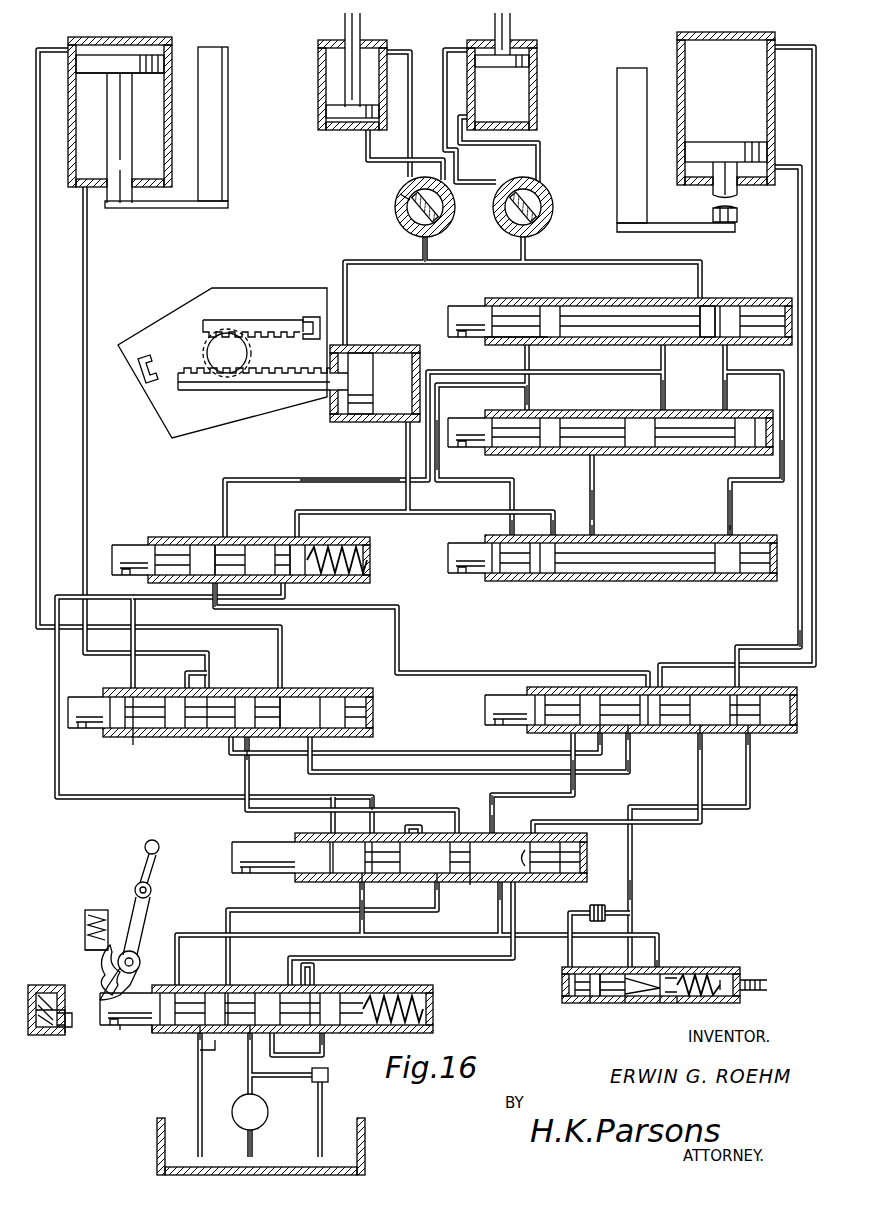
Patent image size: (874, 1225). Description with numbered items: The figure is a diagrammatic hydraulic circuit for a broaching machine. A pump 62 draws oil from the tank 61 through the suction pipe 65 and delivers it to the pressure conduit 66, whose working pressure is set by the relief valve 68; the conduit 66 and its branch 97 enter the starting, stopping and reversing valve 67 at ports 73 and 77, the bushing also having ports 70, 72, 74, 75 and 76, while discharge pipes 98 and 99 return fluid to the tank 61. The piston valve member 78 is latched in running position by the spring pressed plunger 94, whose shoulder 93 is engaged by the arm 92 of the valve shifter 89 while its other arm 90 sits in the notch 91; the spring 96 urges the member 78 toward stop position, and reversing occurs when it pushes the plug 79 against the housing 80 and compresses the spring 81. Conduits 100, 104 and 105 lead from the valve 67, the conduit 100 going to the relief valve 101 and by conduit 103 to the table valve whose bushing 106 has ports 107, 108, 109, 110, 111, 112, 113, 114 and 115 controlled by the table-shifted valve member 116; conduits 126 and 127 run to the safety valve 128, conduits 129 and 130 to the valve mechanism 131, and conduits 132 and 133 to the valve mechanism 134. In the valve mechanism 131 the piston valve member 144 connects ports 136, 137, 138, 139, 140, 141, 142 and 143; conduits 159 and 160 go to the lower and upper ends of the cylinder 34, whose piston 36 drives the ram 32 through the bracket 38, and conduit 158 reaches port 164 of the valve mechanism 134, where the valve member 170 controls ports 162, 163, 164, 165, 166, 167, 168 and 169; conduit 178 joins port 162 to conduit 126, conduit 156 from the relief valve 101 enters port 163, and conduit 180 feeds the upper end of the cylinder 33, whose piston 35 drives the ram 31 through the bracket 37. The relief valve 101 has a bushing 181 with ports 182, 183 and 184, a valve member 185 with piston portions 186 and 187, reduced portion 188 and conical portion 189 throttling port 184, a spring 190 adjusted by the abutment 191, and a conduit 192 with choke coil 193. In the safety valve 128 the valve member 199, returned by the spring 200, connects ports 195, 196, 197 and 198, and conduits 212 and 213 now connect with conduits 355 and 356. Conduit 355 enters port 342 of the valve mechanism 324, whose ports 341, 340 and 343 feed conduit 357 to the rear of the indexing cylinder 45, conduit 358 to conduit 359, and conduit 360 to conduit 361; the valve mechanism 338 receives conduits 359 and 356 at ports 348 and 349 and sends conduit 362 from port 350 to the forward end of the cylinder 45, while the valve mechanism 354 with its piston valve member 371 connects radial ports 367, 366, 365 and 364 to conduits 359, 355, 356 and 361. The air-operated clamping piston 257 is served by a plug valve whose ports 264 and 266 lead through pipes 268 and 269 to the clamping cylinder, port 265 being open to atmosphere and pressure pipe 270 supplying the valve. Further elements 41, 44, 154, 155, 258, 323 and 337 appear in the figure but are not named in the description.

The plate 31 is at (228, 60).
The plate 32 is at (642, 66).
The cylinder 33 is at (121, 121).
The cylinder 34 is at (705, 114).
The piston 35 is at (160, 58).
The piston 36 is at (722, 133).
The base 37 is at (148, 208).
The stop block 38 is at (692, 220).
The bracket 41 is at (285, 292).
The cylinder 44 is at (375, 374).
The piston 45 is at (410, 352).
The reservoir 61 is at (364, 1125).
The pump 62 is at (262, 1098).
The suction pipe 65 is at (252, 1135).
The pump line 66 is at (247, 1078).
The valve end cap 67 is at (432, 1020).
The relief valve 68 is at (328, 1080).
The control valve 70 is at (282, 1015).
The port 72 is at (232, 992).
The port 73 is at (244, 1038).
The pipe 74 is at (276, 1037).
The port 75 is at (300, 983).
The port 76 is at (308, 990).
The port 77 is at (192, 1033).
The valve stem 78 is at (150, 1035).
The plunger 79 is at (72, 1030).
The spring seat 80 is at (70, 1038).
The spring housing 81 is at (50, 1040).
The hand lever 89 is at (140, 952).
The cam 90 is at (142, 972).
The link 91 is at (126, 1033).
The follower 92 is at (100, 965).
The spring seat 93 is at (88, 952).
The spring housing 94 is at (86, 942).
The spring 96 is at (432, 1000).
The pipe 97 is at (324, 1058).
The return pipe 98 is at (198, 1080).
The pipe 99 is at (200, 1055).
The pressure line 100 is at (460, 937).
The spring seat 101 is at (716, 968).
The pipe 103 is at (360, 922).
The pipe 104 is at (410, 910).
The pipe 105 is at (512, 924).
The valve end cap 106 is at (590, 866).
The port 107 is at (330, 840).
The port 108 is at (362, 885).
The port 109 is at (372, 840).
The port loop 110 is at (410, 830).
The port 111 is at (436, 884).
The port 112 is at (470, 882).
The pipe 113 is at (492, 825).
The pipe 114 is at (512, 905).
The spool land 115 is at (542, 856).
The control valve 116 is at (414, 873).
The pipe 126 is at (112, 797).
The pipe 127 is at (376, 795).
The valve end cap 128 is at (366, 578).
The pipe 129 is at (88, 304).
The pipe 130 is at (712, 812).
The valve end cap 131 is at (780, 730).
The pipe 132 is at (252, 810).
The pipe 133 is at (484, 785).
The valve end cap 134 is at (375, 698).
The pipe 136 is at (560, 708).
The port 137 is at (608, 748).
The port 138 is at (630, 738).
The port 139 is at (644, 680).
The port 140 is at (680, 682).
The port 141 is at (698, 740).
The pipe 142 is at (730, 655).
The port 143 is at (750, 735).
The control valve 144 is at (636, 728).
The pipe 154 is at (571, 770).
The pipe 155 is at (625, 774).
The pipe 156 is at (633, 880).
The pipe 158 is at (431, 635).
The pipe 159 is at (798, 241).
The pipe 160 is at (812, 258).
The port 162 is at (132, 690).
The port 163 is at (154, 745).
The port loop 164 is at (186, 686).
The port 165 is at (210, 686).
The pipe 166 is at (228, 744).
The port 167 is at (244, 756).
The port 168 is at (283, 686).
The pipe 169 is at (300, 716).
The control valve 170 is at (252, 716).
The pipe 178 is at (131, 614).
The pipe 180 is at (40, 304).
The valve end cap 181 is at (724, 1003).
The pressure regulating valve 182 is at (649, 981).
The spool 183 is at (622, 970).
The port 184 is at (660, 968).
The end cap 185 is at (562, 992).
The port 186 is at (592, 1003).
The port 187 is at (680, 1003).
The port 188 is at (628, 1003).
The valve seat 189 is at (662, 1003).
The spring 190 is at (700, 970).
The adjusting screw 191 is at (738, 968).
The pipe 192 is at (568, 945).
The restriction 193 is at (588, 905).
The port 195 is at (212, 600).
The port 196 is at (218, 542).
The pipe 197 is at (283, 588).
The port 198 is at (292, 542).
The control valve 199 is at (259, 555).
The spring 200 is at (372, 542).
The pipe 212 is at (292, 484).
The pipe 213 is at (384, 514).
The piston 257 is at (326, 108).
The cylinder 258 is at (320, 120).
The rotary valve 264 is at (405, 191).
The valve plug 265 is at (398, 206).
The rotary valve 266 is at (491, 116).
The pipe 268 is at (398, 52).
The pipe 269 is at (366, 160).
The pipe 270 is at (422, 244).
The control valve 323 is at (593, 570).
The valve end cap 324 is at (750, 582).
The control valve 337 is at (620, 310).
The valve end cap 338 is at (782, 300).
The port 340 is at (500, 532).
The port 341 is at (552, 535).
The port 342 is at (598, 535).
The port 343 is at (732, 535).
The pipe 348 is at (524, 350).
The pipe 349 is at (660, 350).
The spool land 350 is at (694, 304).
The pipe 354 is at (748, 455).
The pipe 355 is at (596, 495).
The pipe 356 is at (660, 388).
The pipe 357 is at (718, 350).
The pipe 358 is at (446, 484).
The pipe 359 is at (532, 386).
The pipe 360 is at (728, 508).
The pipe 361 is at (730, 388).
The pipe 362 is at (596, 258).
The port 364 is at (730, 408).
The port 365 is at (668, 406).
The pipe 366 is at (588, 460).
The port 367 is at (532, 404).
The control valve 371 is at (470, 420).